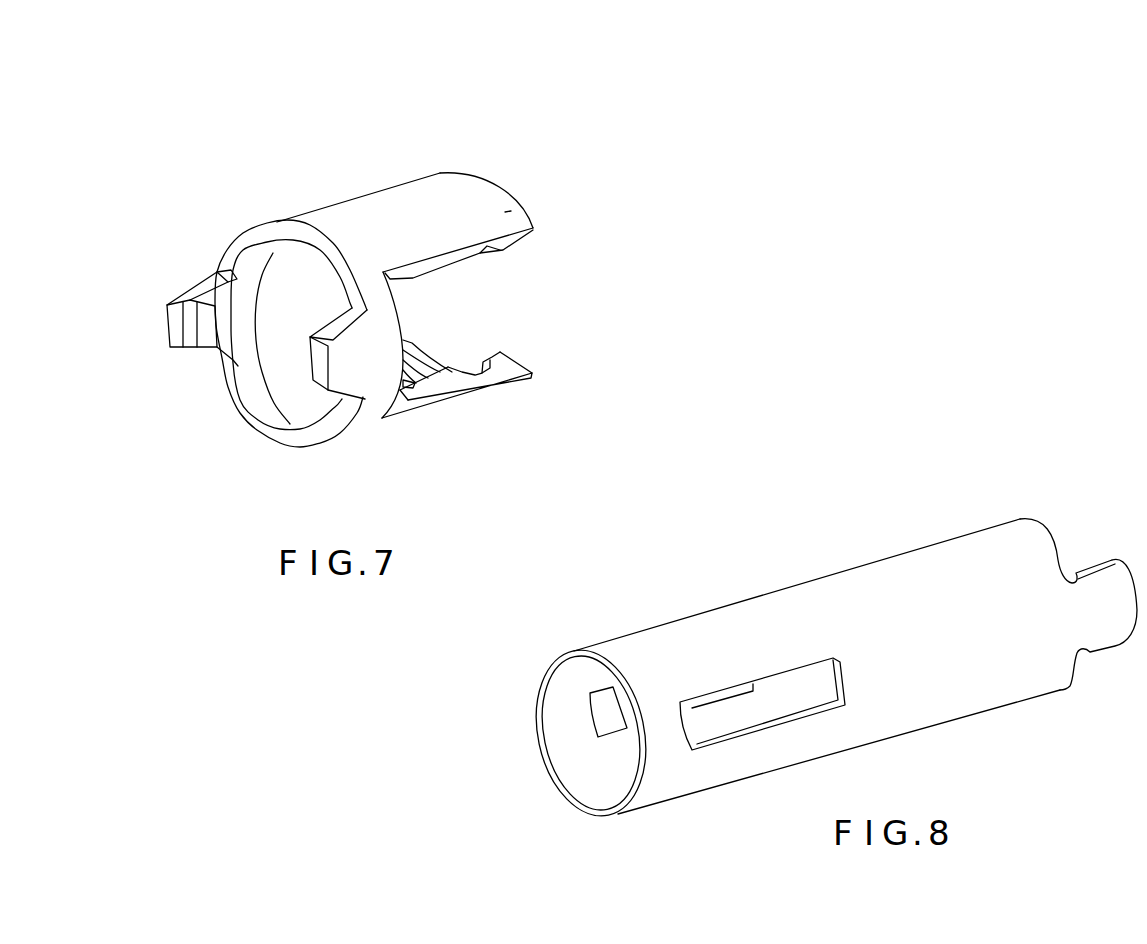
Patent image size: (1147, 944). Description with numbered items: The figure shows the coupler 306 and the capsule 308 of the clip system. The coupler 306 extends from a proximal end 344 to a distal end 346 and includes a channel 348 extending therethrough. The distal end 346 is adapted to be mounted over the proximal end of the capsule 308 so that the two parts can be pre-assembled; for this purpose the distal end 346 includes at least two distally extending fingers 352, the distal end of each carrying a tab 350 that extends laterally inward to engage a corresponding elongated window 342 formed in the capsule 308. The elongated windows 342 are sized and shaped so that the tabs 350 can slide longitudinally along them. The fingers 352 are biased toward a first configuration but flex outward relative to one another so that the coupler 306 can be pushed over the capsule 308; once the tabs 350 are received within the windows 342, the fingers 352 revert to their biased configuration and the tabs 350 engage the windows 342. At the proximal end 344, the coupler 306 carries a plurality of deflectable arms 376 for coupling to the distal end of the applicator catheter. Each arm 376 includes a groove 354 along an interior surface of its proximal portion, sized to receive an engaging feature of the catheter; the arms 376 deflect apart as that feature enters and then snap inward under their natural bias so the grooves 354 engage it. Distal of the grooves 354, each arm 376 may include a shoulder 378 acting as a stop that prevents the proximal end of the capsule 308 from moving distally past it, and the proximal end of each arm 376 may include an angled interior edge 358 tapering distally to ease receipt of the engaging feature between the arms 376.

In FIG. 7, the coupler 306 is at (320, 150).
In FIG. 8, the capsule 308 is at (847, 530).
In FIG. 8, the elongated window 342 is at (780, 690).
In FIG. 7, the proximal end 344 is at (520, 212).
In FIG. 7, the distal end 346 is at (248, 405).
In FIG. 7, the channel 348 is at (485, 290).
In FIG. 7, the tab 350 is at (303, 333).
In FIG. 7, the finger 352 is at (173, 330).
In FIG. 7, the groove 354 is at (473, 350).
In FIG. 7, the angled interior edge 358 is at (525, 358).
In FIG. 7, the deflectable arm 376 is at (443, 192).
In FIG. 7, the shoulder 378 is at (403, 400).